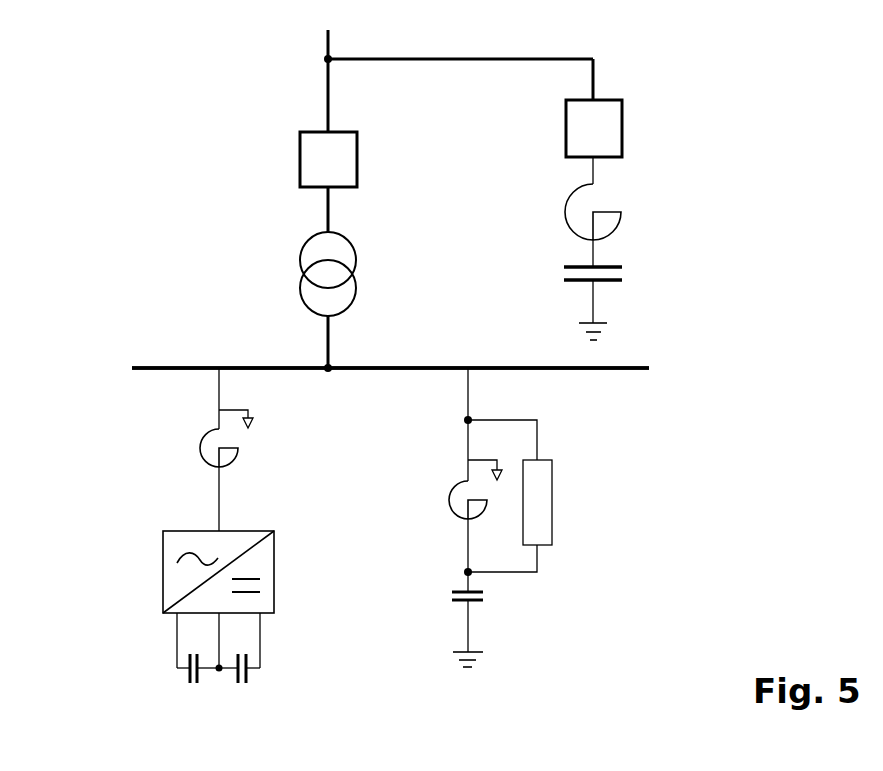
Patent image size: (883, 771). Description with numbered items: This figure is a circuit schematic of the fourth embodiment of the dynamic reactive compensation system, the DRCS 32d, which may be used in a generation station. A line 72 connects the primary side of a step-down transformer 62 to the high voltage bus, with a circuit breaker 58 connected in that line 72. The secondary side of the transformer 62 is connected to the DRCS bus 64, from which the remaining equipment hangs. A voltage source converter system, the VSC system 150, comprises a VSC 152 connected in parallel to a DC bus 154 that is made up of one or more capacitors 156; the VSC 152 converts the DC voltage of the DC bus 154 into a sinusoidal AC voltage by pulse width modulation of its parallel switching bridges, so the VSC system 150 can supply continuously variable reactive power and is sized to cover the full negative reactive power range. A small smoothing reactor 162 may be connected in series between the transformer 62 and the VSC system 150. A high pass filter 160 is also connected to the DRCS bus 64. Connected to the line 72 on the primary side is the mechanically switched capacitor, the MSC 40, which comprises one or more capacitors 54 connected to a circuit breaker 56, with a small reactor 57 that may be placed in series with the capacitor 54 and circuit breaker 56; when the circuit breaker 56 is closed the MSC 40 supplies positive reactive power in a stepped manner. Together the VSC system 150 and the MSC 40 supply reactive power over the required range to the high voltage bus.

The DRCS 32d is at (390, 297).
The mechanically switched capacitor (MSC) 40 is at (631, 248).
The capacitor 54 is at (604, 290).
The circuit breaker 56 is at (622, 143).
The small reactor 57 is at (555, 200).
The circuit breaker 58 is at (357, 163).
The step-down transformer 62 is at (374, 238).
The DRCS bus 64 is at (441, 367).
The line 72 is at (327, 118).
The voltage source converter (VSC) system 150 is at (311, 588).
The voltage source converter (VSC) 152 is at (152, 560).
The DC bus 154 is at (176, 683).
The capacitor 156 is at (200, 689).
The high pass filter 160 is at (575, 490).
The small smoothing reactor 162 is at (189, 431).